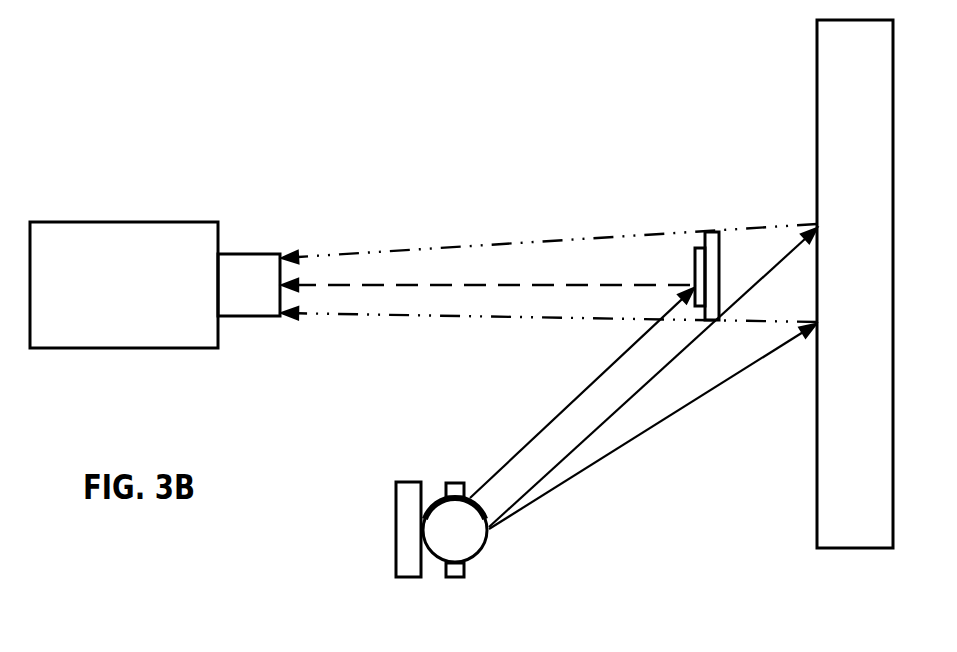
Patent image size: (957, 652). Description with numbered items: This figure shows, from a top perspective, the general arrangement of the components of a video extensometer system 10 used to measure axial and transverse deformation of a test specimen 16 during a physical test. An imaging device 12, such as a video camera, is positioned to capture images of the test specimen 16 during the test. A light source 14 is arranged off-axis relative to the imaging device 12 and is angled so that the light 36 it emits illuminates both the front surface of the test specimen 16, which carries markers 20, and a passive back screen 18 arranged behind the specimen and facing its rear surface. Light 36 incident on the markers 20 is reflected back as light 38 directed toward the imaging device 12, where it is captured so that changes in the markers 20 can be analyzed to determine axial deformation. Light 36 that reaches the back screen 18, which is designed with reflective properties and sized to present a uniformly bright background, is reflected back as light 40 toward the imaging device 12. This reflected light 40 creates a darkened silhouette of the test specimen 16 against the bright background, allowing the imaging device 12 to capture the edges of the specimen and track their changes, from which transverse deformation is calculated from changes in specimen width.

The video extensometer system 10 is at (253, 70).
The imaging device 12 is at (155, 222).
The light source 14 is at (396, 482).
The test specimen 16 is at (721, 253).
The back screen 18 is at (869, 298).
The markers 20 is at (695, 256).
The light 36 is at (524, 512).
The reflected light 38 is at (556, 286).
The reflected light 40 is at (372, 249).